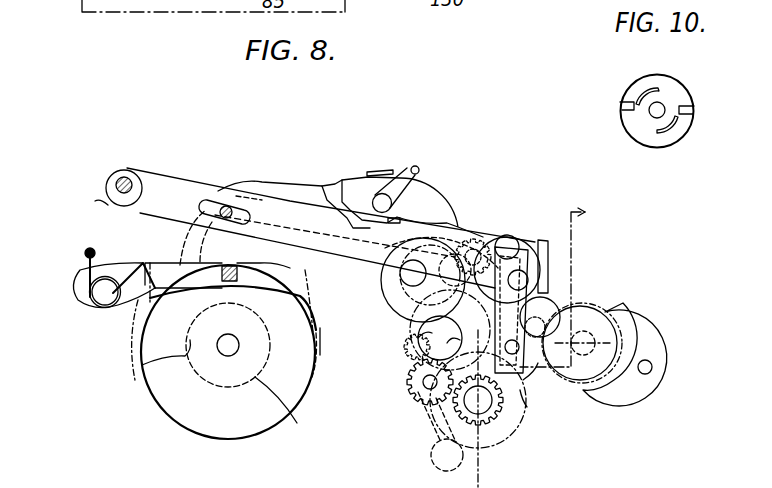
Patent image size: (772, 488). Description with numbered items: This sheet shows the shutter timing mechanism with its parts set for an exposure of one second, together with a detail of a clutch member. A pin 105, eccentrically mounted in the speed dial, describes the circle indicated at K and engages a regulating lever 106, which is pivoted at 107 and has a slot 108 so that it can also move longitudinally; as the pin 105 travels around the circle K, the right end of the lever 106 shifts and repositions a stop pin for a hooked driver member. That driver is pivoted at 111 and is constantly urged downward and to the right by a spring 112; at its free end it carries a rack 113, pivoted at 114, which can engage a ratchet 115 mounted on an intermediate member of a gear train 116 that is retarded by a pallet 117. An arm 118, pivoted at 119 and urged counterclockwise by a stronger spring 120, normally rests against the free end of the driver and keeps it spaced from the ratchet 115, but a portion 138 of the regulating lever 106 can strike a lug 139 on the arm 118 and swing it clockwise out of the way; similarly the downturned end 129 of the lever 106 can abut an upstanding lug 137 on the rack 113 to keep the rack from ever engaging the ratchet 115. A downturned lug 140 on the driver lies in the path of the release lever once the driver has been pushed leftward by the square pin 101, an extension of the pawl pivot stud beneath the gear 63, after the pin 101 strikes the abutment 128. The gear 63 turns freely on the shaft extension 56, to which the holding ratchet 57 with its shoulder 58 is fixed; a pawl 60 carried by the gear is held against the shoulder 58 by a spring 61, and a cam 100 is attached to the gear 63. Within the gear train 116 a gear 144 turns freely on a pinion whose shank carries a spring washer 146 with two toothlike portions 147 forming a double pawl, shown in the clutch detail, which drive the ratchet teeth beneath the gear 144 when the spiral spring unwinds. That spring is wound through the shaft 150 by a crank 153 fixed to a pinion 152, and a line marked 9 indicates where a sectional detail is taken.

In FIG. 8, the pin 105 is at (112, 174).
In FIG. 8, the regulating lever 106 is at (158, 182).
In FIG. 8, the pivot 107 is at (226, 206).
In FIG. 8, the slot 108 is at (205, 203).
In FIG. 8, the downturned lug 140 is at (268, 182).
In FIG. 8, the portion 138 is at (330, 184).
In FIG. 8, the lug 139 is at (385, 172).
In FIG. 8, the pivot 119 is at (396, 180).
In FIG. 8, the spring 120 is at (418, 167).
In FIG. 8, the arm 118 is at (437, 200).
In FIG. 8, the downturned end 129 is at (528, 242).
In FIG. 8, the upstanding lug 137 is at (543, 240).
In FIG. 8, the ratchet 115 is at (473, 242).
In FIG. 8, the rack 113 is at (500, 241).
In FIG. 8, the circle K is at (108, 205).
In FIG. 8, the spring 112 is at (100, 259).
In FIG. 8, the pivot 111 is at (97, 305).
In FIG. 8, the abutment 128 is at (232, 271).
In FIG. 8, the square pin 101 is at (296, 283).
In FIG. 8, the toothlike portions 147 is at (398, 322).
In FIG. 10, the toothlike portions 147 is at (621, 105).
In FIG. 8, the spring washer 146 is at (418, 336).
In FIG. 10, the spring washer 146 is at (643, 128).
In FIG. 8, the gear 63 is at (320, 328).
In FIG. 8, the spring 61 is at (320, 355).
In FIG. 8, the gear 144 is at (408, 352).
In FIG. 8, the pawl 60 is at (140, 328).
In FIG. 8, the shoulder 58 is at (142, 365).
In FIG. 8, the shaft extension 56 is at (226, 356).
In FIG. 8, the cam 100 is at (185, 408).
In FIG. 8, the holding ratchet 57 is at (252, 374).
In FIG. 8, the pinion 152 is at (412, 392).
In FIG. 8, the crank 153 is at (432, 432).
In FIG. 8, the shaft 150 is at (488, 405).
In FIG. 8, the pivot 114 is at (540, 365).
In FIG. 8, the gear train 116 is at (580, 305).
In FIG. 8, the pallet 117 is at (660, 342).
In FIG. 8, the section line 9 is at (550, 344).